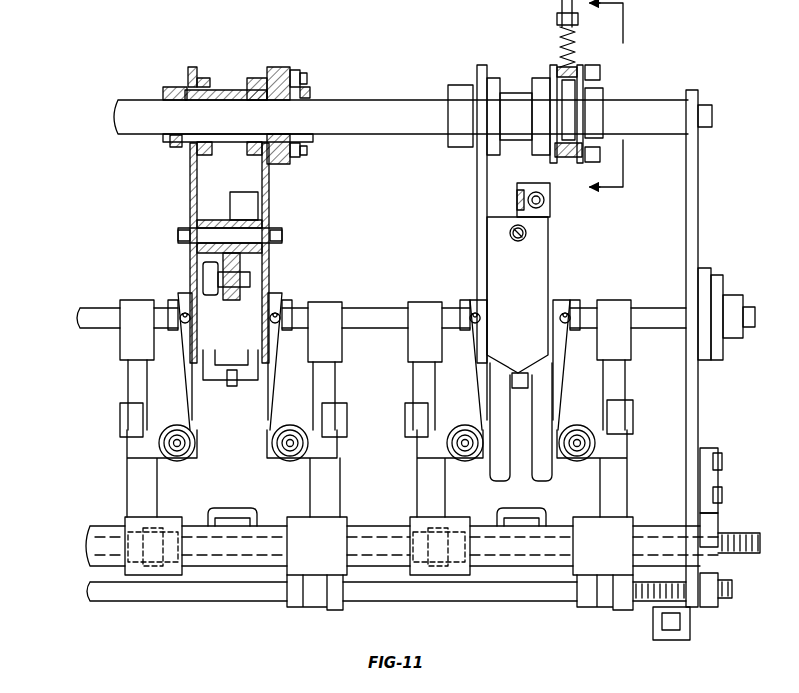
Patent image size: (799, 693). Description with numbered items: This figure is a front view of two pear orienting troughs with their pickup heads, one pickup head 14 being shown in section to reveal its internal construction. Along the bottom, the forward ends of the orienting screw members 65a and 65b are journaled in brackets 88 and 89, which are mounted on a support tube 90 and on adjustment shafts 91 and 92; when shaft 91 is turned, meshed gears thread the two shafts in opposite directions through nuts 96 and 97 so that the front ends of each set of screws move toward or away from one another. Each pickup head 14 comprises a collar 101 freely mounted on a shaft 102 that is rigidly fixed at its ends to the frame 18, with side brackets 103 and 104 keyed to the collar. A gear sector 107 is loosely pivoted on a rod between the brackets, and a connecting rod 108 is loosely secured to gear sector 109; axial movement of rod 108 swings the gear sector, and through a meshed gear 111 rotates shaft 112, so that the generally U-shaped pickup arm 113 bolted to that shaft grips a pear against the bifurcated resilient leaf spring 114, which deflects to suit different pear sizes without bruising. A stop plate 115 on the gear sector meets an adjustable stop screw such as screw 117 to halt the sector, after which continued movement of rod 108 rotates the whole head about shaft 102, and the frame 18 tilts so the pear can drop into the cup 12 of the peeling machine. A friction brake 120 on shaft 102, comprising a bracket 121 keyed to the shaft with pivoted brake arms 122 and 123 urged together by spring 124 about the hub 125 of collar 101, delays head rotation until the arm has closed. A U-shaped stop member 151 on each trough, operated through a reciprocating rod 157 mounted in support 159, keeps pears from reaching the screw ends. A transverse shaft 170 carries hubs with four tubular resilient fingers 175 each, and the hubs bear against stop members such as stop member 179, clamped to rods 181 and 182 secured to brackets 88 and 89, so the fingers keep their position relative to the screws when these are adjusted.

The cup 12 is at (625, 108).
The pickup head 14 is at (298, 220).
The frame 18 is at (700, 228).
The screw member 65a is at (168, 458).
The screw member 65b is at (285, 455).
The bracket 88 is at (130, 478).
The bracket 89 is at (334, 484).
The support tube 90 is at (110, 527).
The adjustment shaft 91 is at (78, 540).
The adjustment shaft 92 is at (205, 598).
The nut 96 is at (715, 526).
The nut 97 is at (712, 612).
The collar 101 is at (228, 90).
The shaft 102 is at (398, 100).
The side bracket 103 is at (190, 180).
The side bracket 104 is at (270, 196).
The gear sector 107 is at (238, 258).
The connecting rod 108 is at (208, 268).
The gear sector 109 is at (228, 279).
The gear 111 is at (214, 370).
The shaft 112 is at (200, 340).
The pickup arm 113 is at (237, 380).
The bifurcated resilient leaf spring 114 is at (545, 418).
The stop plate 115 is at (244, 192).
The adjustable stop screw 117 is at (526, 186).
The friction brake 120 is at (608, 90).
The bracket 121 is at (310, 138).
The brake arm 122 is at (300, 72).
The brake arm 123 is at (290, 155).
The spring 124 is at (577, 46).
The hub 125 is at (283, 70).
The stop member 151 is at (250, 514).
The rod 157 is at (660, 625).
The support 159 is at (672, 630).
The shaft 170 is at (380, 314).
The tubular resilient finger 175 is at (190, 400).
The stop member 179 is at (408, 352).
The rod 181 is at (128, 415).
The rod 182 is at (330, 422).